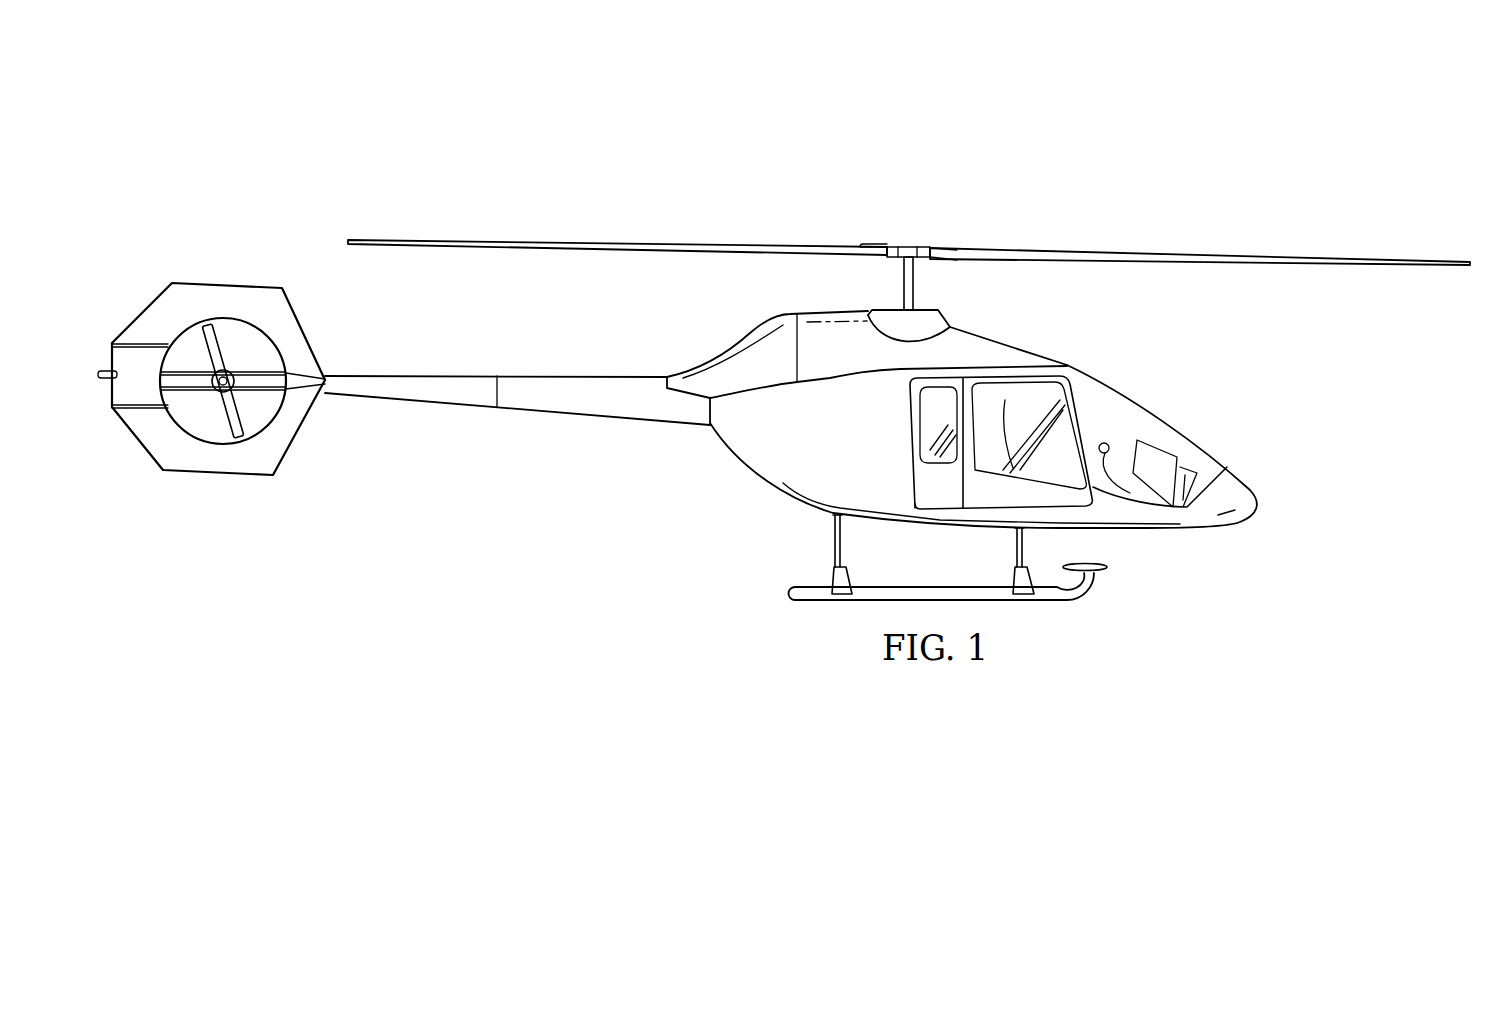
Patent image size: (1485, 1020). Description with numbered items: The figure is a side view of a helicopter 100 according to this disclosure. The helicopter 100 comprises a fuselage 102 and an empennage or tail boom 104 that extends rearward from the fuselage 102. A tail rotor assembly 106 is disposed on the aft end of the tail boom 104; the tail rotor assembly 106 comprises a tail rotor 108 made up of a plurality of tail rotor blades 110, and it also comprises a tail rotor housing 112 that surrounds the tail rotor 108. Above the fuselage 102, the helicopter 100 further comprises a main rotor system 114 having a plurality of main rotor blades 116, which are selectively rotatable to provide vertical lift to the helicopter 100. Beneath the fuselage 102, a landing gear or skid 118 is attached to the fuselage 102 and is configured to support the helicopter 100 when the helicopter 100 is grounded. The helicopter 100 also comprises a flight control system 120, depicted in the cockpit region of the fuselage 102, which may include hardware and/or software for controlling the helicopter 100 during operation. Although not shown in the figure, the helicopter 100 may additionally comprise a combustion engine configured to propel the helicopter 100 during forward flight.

The helicopter 100 is at (443, 144).
The fuselage 102 is at (1203, 530).
The tail boom 104 is at (544, 417).
The tail rotor assembly 106 is at (148, 292).
The tail rotor 108 is at (180, 421).
The tail rotor blades 110 is at (222, 344).
The tail rotor housing 112 is at (254, 477).
The main rotor system 114 is at (913, 237).
The main rotor blades 116 is at (618, 243).
The landing gear or skid 118 is at (835, 543).
The flight control system 120 is at (1157, 442).